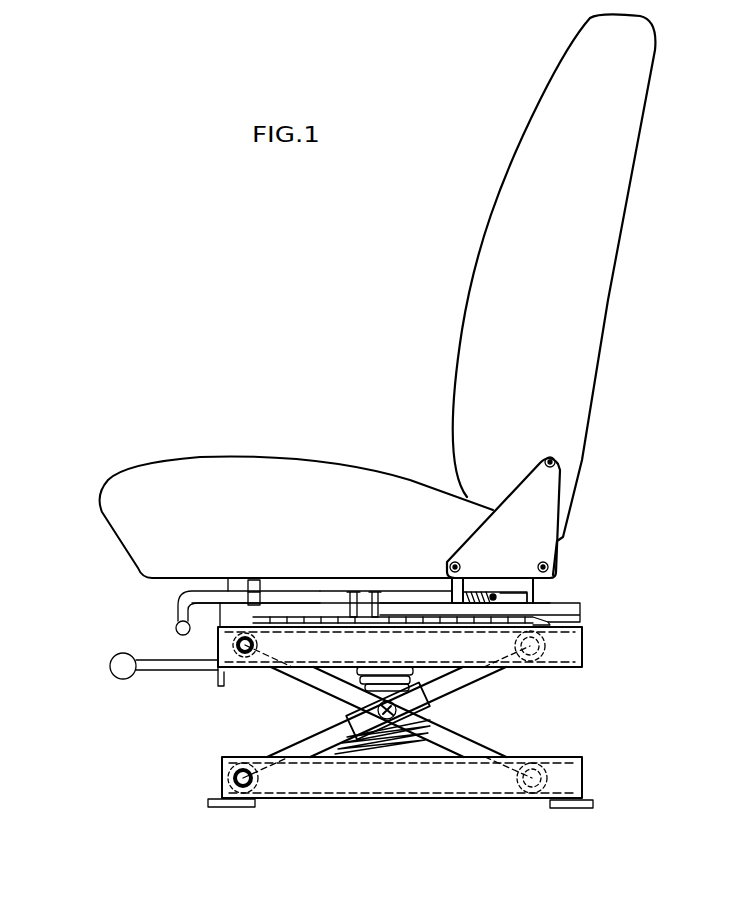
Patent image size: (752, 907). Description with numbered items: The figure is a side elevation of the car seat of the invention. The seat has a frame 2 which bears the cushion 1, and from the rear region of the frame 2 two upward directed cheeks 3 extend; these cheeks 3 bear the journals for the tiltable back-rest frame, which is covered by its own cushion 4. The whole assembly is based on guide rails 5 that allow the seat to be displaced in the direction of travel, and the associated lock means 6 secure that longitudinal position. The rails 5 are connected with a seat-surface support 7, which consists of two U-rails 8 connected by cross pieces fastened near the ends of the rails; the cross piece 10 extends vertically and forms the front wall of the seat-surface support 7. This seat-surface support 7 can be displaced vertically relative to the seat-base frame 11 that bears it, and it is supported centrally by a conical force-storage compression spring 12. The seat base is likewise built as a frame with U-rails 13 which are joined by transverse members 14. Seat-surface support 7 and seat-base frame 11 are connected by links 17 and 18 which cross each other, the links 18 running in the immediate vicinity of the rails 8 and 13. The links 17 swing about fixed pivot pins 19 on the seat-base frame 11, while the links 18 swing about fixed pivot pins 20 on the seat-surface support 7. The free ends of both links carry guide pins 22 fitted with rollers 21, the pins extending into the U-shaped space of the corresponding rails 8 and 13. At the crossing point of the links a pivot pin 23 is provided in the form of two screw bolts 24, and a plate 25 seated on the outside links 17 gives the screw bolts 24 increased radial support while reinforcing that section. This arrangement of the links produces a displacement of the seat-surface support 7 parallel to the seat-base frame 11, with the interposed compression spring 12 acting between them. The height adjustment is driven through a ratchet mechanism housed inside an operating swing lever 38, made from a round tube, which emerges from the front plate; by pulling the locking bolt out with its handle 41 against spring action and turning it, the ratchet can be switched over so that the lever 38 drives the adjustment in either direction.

The cushion 1 is at (327, 493).
The frame 2 is at (287, 587).
The cheeks 3 is at (533, 502).
The cushion 4 is at (503, 238).
The guide rails 5 is at (409, 610).
The lock means 6 is at (170, 604).
The seat-surface support 7 is at (585, 640).
The U-rails 8 is at (555, 640).
The cross piece 10 is at (222, 672).
The seat-base frame 11 is at (580, 754).
The conical force-storage compression spring 12 is at (370, 752).
The U-rails 13 is at (572, 777).
The transverse members 14 is at (218, 806).
The links 17 is at (317, 745).
The links 18 is at (313, 685).
The pivot pins 19 is at (245, 785).
The pivot pins 20 is at (237, 648).
The rollers 21 is at (545, 650).
The guide pins 22 is at (528, 660).
The pivot pin 23 is at (388, 720).
The screw bolts 24 is at (396, 722).
The plate 25 is at (400, 692).
The operating swing lever 38 is at (155, 659).
The handle 41 is at (110, 670).